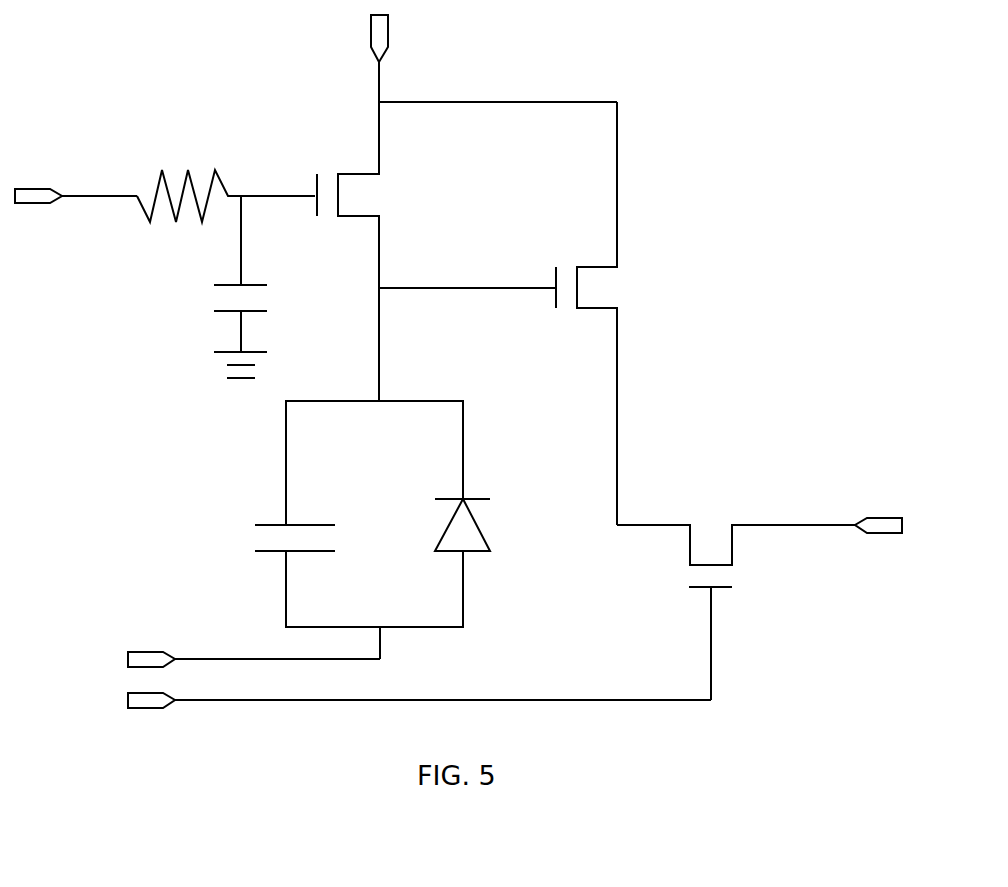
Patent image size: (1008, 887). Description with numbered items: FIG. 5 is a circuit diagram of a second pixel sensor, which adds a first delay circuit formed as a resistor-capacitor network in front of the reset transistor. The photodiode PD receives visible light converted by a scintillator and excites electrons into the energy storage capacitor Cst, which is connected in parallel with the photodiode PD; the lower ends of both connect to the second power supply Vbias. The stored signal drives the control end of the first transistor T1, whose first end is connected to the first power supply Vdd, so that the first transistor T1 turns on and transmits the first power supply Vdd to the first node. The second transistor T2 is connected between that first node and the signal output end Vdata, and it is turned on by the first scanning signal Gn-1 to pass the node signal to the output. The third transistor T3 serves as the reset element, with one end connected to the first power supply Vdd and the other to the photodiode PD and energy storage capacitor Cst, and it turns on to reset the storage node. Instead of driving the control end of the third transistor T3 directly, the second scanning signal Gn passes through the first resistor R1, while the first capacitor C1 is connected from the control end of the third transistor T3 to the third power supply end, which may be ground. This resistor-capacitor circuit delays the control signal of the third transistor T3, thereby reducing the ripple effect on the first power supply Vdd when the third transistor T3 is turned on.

The second scanning signal Gn is at (76, 180).
The first resistor R1 is at (226, 177).
The first capacitor C1 is at (221, 287).
The first power supply Vdd is at (494, 58).
The third transistor T3 is at (364, 251).
The first transistor T1 is at (512, 313).
The energy storage capacitor Cst is at (297, 530).
The photodiode PD is at (457, 514).
The second power supply Vbias is at (246, 645).
The first scanning signal Gn-1 is at (413, 715).
The second transistor T2 is at (736, 597).
The signal output end Vdata is at (880, 514).